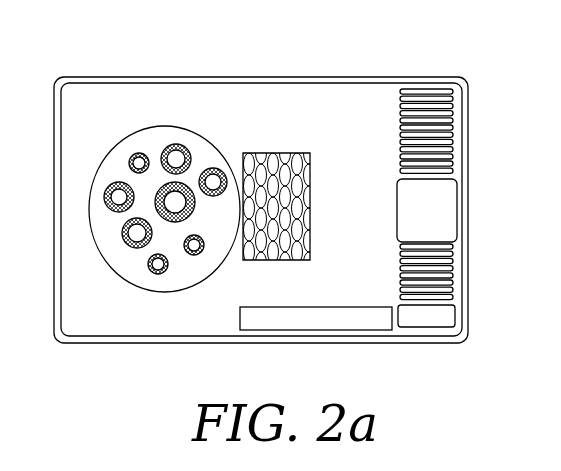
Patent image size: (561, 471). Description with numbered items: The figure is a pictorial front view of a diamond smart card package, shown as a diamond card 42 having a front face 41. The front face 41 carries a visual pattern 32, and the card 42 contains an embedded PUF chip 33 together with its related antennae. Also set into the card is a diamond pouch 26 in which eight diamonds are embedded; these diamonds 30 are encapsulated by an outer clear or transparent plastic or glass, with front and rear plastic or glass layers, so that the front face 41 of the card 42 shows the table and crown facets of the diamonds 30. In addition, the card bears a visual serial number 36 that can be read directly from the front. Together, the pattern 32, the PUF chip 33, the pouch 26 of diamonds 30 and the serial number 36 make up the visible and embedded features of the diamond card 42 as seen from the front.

The diamond card 42 is at (312, 78).
The front face 41 is at (242, 78).
The PUF chip 33 is at (346, 102).
The visual pattern 32 is at (425, 105).
The diamonds 30 is at (133, 236).
The diamond pouch 26 is at (170, 280).
The visual serial number 36 is at (343, 330).